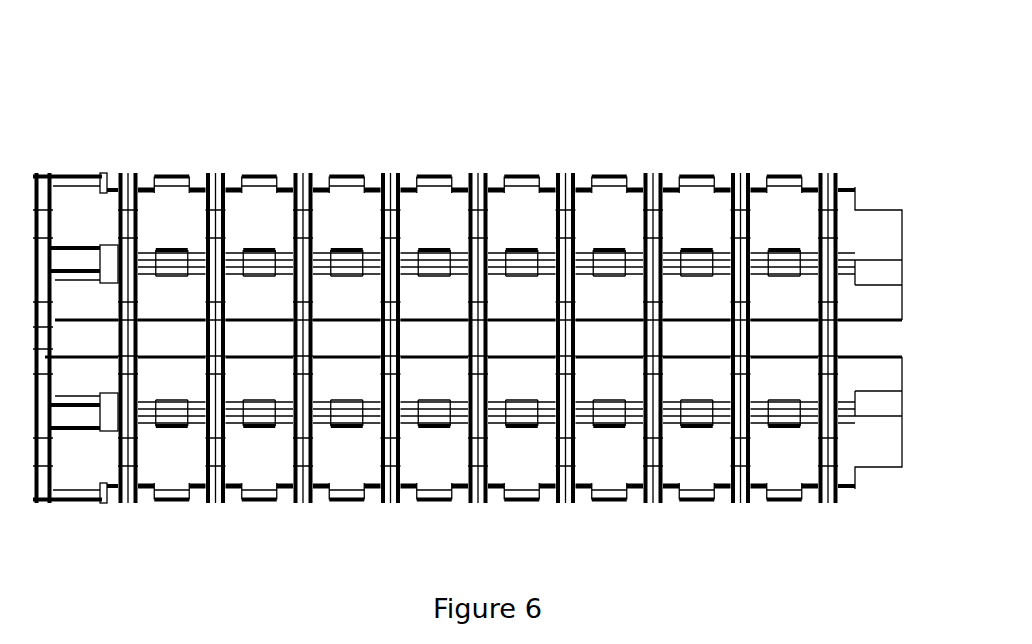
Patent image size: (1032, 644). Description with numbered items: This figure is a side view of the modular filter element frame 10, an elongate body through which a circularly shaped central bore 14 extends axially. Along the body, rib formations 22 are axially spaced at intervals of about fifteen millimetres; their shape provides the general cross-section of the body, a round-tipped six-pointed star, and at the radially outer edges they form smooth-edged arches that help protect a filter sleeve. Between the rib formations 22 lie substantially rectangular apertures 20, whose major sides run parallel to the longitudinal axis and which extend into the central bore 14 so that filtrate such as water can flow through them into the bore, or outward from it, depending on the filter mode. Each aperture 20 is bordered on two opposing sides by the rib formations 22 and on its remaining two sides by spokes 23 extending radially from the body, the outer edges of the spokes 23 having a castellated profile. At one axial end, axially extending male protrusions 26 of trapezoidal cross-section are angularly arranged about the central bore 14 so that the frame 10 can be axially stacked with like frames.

The modular filter element frame 10 is at (82, 82).
The central bore 14 is at (865, 338).
The apertures 20 is at (422, 330).
The rib formations 22 is at (567, 178).
The spokes 23 is at (715, 210).
The male protrusions 26 is at (888, 235).